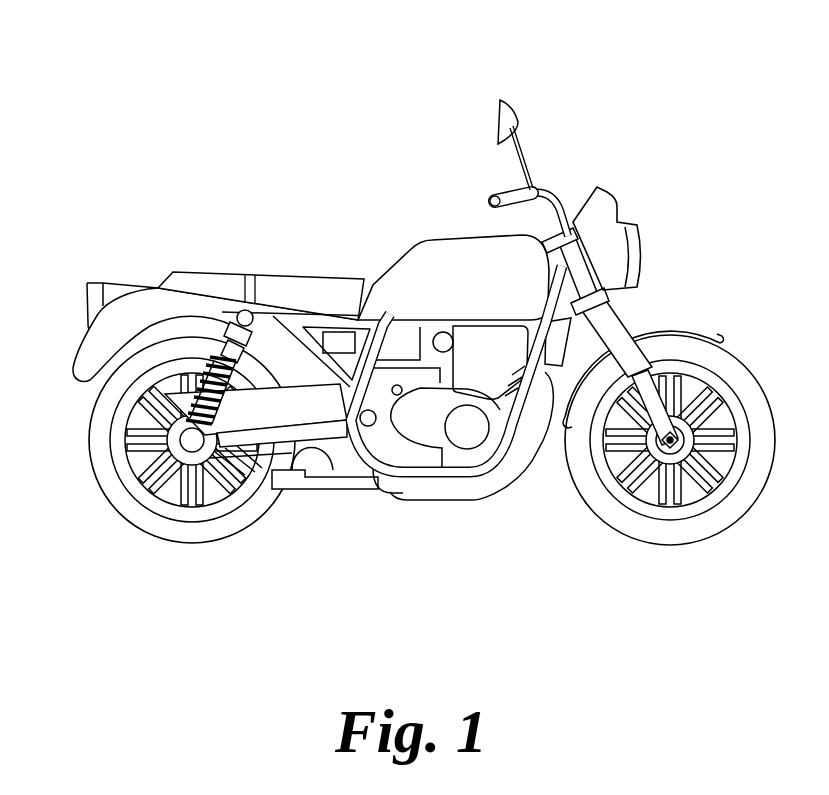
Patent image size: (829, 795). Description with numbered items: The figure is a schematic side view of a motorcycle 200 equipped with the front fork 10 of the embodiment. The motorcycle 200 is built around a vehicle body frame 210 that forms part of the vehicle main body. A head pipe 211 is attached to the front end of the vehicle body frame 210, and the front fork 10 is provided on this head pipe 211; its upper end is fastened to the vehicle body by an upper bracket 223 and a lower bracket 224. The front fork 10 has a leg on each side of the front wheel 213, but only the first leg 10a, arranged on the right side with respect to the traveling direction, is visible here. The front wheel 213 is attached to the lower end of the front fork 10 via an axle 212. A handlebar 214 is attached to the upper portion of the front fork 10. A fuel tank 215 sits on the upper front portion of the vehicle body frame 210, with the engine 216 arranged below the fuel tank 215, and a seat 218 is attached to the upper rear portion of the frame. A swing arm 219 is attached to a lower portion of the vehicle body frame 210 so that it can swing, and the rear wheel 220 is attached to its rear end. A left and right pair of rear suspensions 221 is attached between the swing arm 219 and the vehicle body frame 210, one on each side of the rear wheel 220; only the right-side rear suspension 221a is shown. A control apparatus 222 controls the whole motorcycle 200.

The motorcycle 200 is at (661, 86).
The front fork 10 is at (632, 330).
The first leg 10a is at (647, 443).
The vehicle body frame 210 is at (403, 470).
The head pipe 211 is at (575, 257).
The axle 212 is at (673, 467).
The front wheel 213 is at (733, 507).
The handlebar 214 is at (496, 195).
The fuel tank 215 is at (422, 241).
The engine 216 is at (478, 453).
The seat 218 is at (272, 283).
The swing arm 219 is at (262, 478).
The rear wheel 220 is at (167, 524).
The rear suspension 221 is at (220, 318).
The rear suspension 221a is at (110, 380).
The control apparatus 222 is at (340, 337).
The upper bracket 223 is at (560, 232).
The lower bracket 224 is at (606, 301).